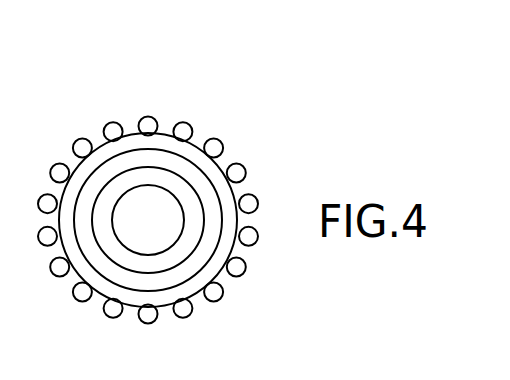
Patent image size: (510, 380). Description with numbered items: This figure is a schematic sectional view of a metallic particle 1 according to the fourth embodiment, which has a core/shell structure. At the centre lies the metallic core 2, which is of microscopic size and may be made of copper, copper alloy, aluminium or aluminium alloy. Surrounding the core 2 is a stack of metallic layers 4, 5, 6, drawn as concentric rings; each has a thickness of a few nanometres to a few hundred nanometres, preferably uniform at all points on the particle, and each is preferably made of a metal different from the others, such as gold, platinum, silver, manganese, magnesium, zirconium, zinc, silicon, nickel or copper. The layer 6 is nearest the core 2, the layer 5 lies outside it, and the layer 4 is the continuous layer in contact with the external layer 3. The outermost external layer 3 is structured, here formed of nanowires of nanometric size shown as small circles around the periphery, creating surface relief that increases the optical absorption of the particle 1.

The metallic particle 1 is at (98, 110).
The core 2 is at (150, 221).
The external layer 3 is at (214, 148).
The metallic layer 4 is at (163, 147).
The metallic layer 5 is at (100, 182).
The metallic layer 6 is at (190, 203).